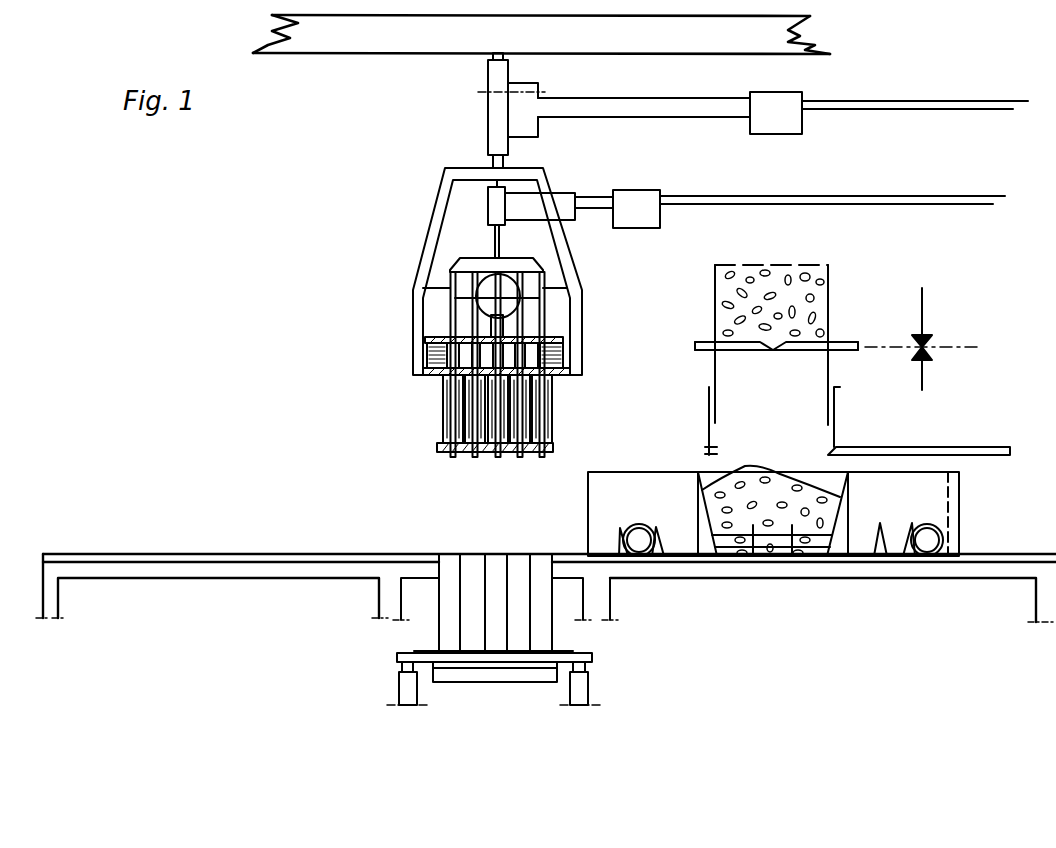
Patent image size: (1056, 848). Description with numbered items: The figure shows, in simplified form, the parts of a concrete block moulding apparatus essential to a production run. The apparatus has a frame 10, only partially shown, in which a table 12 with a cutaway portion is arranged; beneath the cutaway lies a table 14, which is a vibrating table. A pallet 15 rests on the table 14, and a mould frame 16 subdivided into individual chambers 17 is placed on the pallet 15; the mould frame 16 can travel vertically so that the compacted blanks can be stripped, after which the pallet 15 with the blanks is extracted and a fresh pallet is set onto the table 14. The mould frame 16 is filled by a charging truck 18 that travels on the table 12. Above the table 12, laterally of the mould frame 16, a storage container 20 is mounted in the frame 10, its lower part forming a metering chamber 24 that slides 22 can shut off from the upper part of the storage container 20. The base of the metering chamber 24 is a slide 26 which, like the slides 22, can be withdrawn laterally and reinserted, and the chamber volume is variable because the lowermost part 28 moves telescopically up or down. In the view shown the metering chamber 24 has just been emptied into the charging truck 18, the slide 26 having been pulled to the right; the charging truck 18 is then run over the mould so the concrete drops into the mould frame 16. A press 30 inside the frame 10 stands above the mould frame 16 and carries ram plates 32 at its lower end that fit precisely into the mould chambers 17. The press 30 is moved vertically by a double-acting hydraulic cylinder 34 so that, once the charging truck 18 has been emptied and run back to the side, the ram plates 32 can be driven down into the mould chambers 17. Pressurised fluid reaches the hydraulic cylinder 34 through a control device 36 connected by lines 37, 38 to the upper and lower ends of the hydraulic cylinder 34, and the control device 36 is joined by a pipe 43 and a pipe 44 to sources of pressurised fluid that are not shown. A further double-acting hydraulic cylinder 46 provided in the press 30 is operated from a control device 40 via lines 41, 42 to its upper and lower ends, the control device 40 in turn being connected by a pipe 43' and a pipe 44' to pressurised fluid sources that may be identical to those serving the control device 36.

The frame 10 is at (339, 42).
The table 12 is at (243, 572).
The table 14 is at (400, 652).
The pallet 15 is at (575, 650).
The mould frame 16 is at (553, 628).
The chambers 17 is at (453, 620).
The charging truck 18 is at (958, 506).
The storage container 20 is at (823, 313).
The slides 22 is at (848, 353).
The metering chamber 24 is at (743, 397).
The slide 26 is at (962, 452).
The lowermost part 28 is at (836, 414).
The press 30 is at (432, 227).
The ram plates 32 is at (553, 447).
The hydraulic cylinder 34 is at (497, 117).
The control device 36 is at (795, 123).
The line 37 is at (647, 107).
The line 38 is at (617, 118).
The control device 40 is at (637, 207).
The line 41 is at (594, 197).
The line 42 is at (597, 209).
The pipe 43 is at (915, 80).
The pipe 44 is at (907, 133).
The pipe 43' is at (832, 179).
The pipe 44' is at (826, 225).
The hydraulic cylinder 46 is at (497, 200).